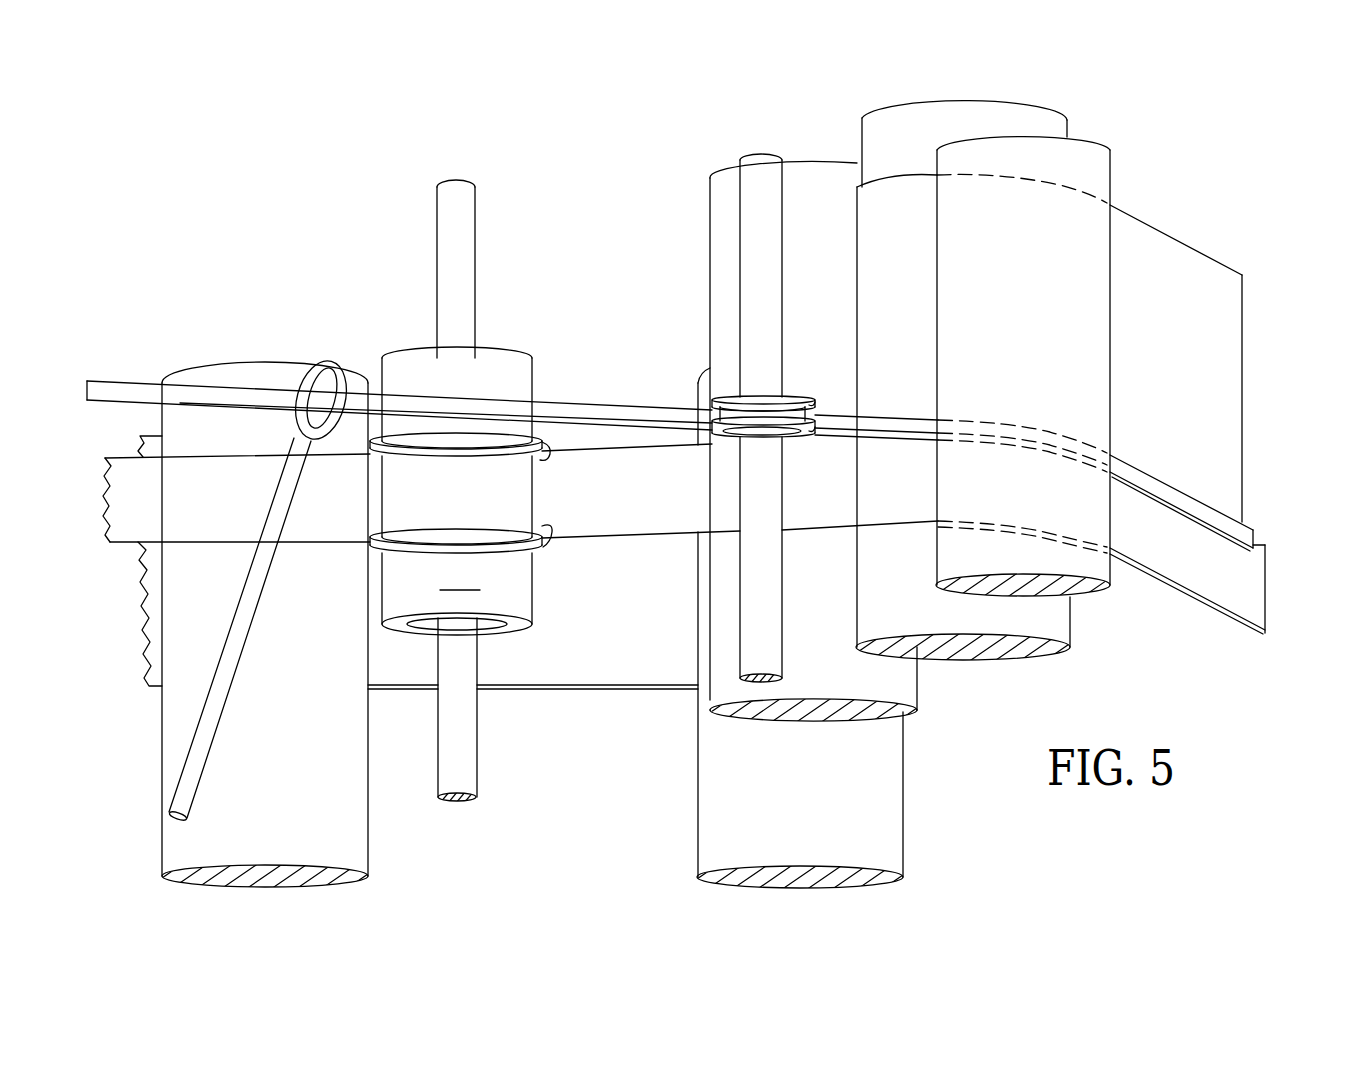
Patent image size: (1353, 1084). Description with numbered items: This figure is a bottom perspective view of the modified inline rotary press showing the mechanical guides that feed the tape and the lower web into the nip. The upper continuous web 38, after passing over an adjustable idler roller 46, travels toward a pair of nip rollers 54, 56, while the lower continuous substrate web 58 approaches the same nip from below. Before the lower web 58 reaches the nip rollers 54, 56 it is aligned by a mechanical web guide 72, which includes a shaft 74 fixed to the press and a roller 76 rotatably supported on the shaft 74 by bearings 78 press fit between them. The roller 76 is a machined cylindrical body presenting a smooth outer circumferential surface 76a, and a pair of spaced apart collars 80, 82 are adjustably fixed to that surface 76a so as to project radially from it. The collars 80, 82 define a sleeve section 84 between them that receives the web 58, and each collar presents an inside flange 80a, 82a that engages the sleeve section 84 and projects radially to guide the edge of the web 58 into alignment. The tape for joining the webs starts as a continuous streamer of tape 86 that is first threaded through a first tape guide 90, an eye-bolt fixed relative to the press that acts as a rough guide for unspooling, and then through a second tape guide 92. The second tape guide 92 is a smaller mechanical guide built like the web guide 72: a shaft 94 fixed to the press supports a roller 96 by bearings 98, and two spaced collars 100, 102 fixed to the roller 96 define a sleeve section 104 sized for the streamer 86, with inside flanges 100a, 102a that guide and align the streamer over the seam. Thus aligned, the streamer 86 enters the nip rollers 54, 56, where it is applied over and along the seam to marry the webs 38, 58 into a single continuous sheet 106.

The upper continuous web 38 is at (524, 665).
The idler roller 46 is at (352, 843).
The nip roller 54 is at (1050, 615).
The nip roller 56 is at (1103, 563).
The lower continuous substrate web 58 is at (152, 507).
The mechanical web guide 72 is at (468, 163).
The shaft 74 is at (472, 768).
The roller 76 is at (520, 362).
The outer circumferential surface 76a is at (462, 576).
The bearings 78 is at (485, 625).
The collar 80 is at (533, 542).
The inside flange 80a is at (547, 530).
The collar 82 is at (535, 440).
The inside flange 82a is at (547, 458).
The sleeve section 84 is at (527, 483).
The streamer of tape 86 is at (113, 388).
The first tape guide 90 is at (180, 790).
The second tape guide 92 is at (772, 150).
The shaft 94 is at (745, 183).
The roller 96 is at (722, 396).
The bearings 98 is at (730, 437).
The collar 100 is at (714, 425).
The inside flange 100a is at (817, 430).
The collar 102 is at (712, 403).
The inside flange 102a is at (818, 408).
The sleeve section 104 is at (735, 413).
The single continuous sheet 106 is at (1207, 373).